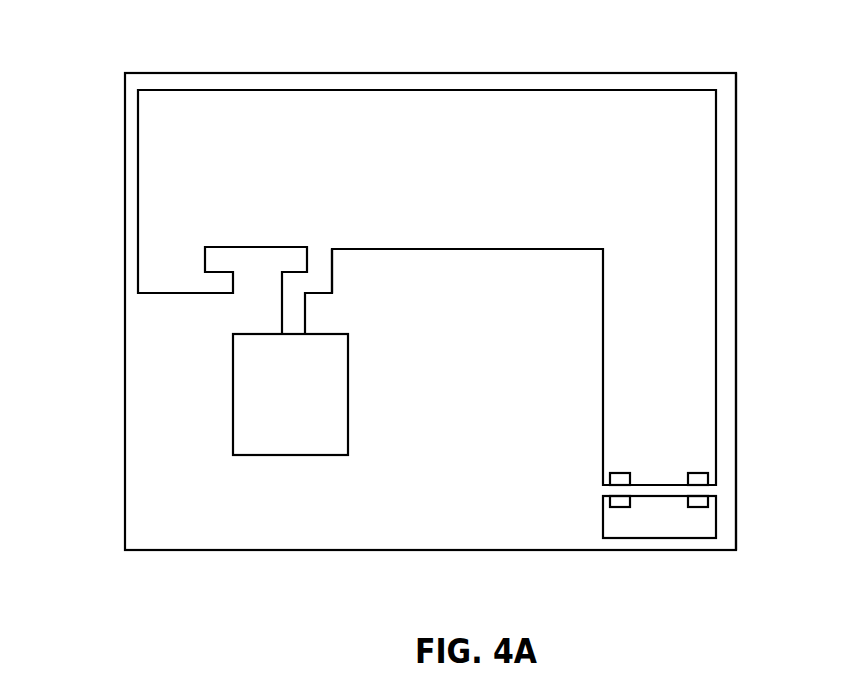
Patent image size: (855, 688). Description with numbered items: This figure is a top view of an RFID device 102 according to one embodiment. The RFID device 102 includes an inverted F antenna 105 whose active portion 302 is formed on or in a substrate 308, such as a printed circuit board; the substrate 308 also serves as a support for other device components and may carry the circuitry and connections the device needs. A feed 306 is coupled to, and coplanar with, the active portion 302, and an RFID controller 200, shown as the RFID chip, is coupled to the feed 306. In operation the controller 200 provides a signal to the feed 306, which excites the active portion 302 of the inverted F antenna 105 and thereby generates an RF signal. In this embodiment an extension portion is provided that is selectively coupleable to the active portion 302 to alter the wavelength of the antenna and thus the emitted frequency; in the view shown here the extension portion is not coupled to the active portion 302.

The RFID device 102 is at (98, 148).
The inverted F antenna 105 is at (522, 108).
The RFID controller 200 is at (282, 455).
The active portion 302 is at (678, 154).
The feed 306 is at (333, 275).
The substrate 308 is at (737, 232).